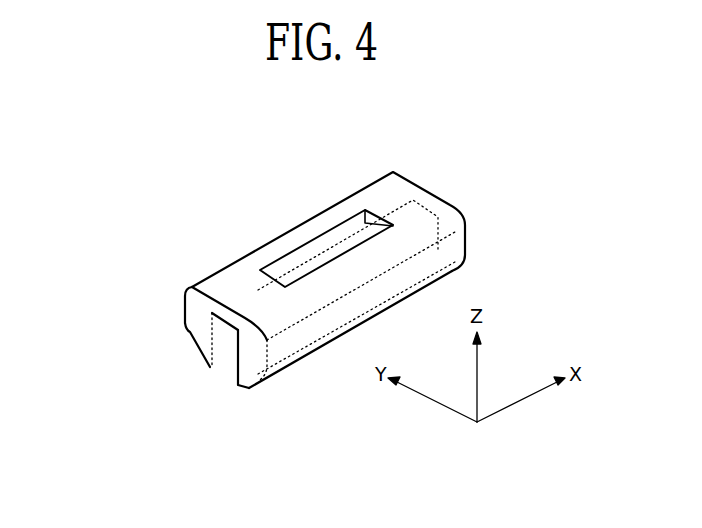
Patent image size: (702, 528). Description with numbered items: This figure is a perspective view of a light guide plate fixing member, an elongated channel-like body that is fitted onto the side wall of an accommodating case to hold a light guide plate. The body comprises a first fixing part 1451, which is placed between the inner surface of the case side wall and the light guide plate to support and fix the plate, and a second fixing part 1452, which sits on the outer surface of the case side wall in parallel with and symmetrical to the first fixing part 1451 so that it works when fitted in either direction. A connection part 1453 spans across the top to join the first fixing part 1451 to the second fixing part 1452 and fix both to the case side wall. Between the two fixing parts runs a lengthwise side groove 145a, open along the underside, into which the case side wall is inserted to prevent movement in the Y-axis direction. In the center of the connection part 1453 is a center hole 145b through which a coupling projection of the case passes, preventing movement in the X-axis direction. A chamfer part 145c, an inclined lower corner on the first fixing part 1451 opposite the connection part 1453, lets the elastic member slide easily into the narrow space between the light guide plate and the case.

The first fixing part 1451 is at (253, 358).
The second fixing part 1452 is at (203, 337).
The connection part 1453 is at (235, 283).
The side groove 145a is at (238, 363).
The center hole 145b is at (327, 247).
The chamfer part 145c is at (188, 333).